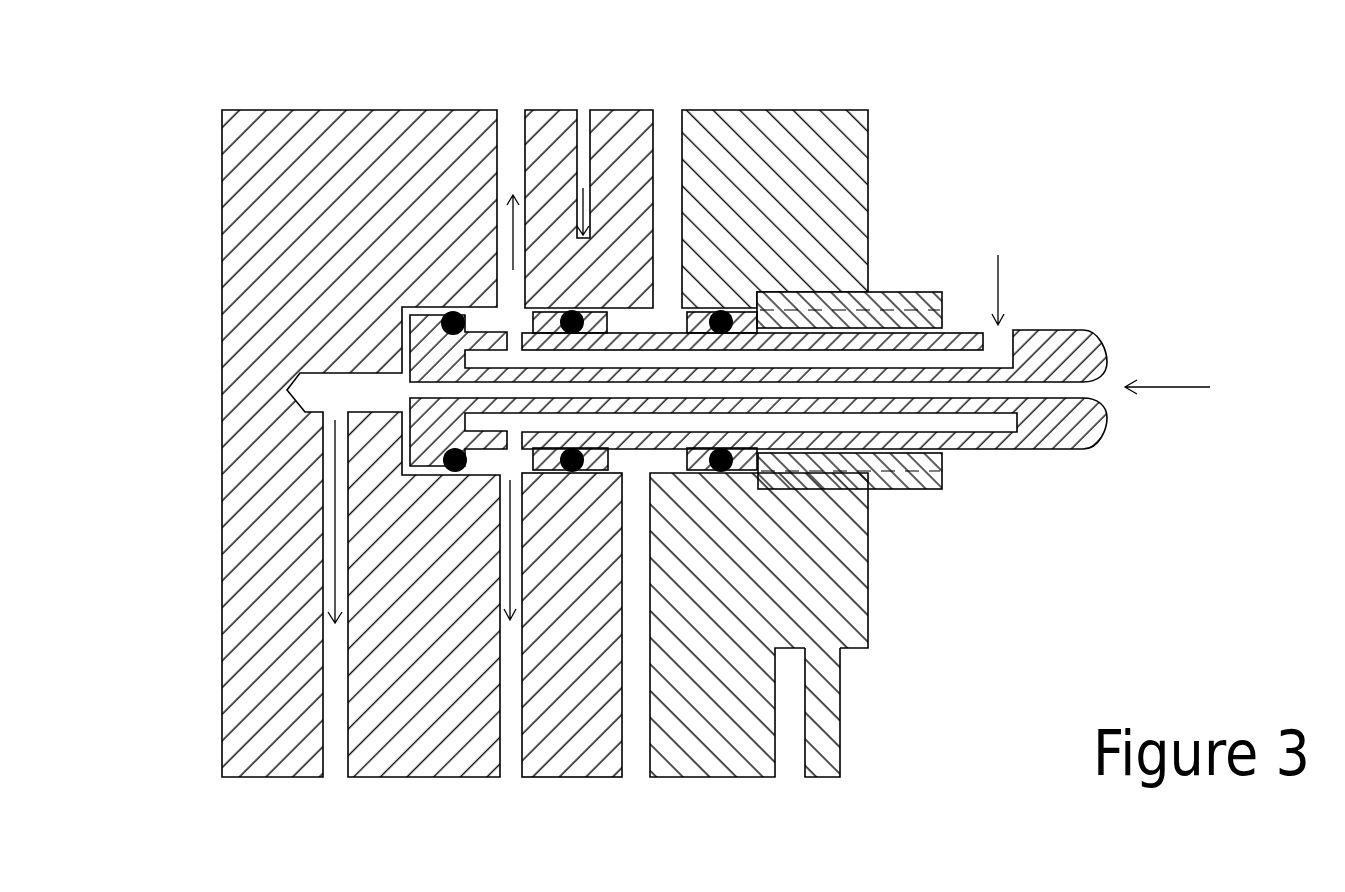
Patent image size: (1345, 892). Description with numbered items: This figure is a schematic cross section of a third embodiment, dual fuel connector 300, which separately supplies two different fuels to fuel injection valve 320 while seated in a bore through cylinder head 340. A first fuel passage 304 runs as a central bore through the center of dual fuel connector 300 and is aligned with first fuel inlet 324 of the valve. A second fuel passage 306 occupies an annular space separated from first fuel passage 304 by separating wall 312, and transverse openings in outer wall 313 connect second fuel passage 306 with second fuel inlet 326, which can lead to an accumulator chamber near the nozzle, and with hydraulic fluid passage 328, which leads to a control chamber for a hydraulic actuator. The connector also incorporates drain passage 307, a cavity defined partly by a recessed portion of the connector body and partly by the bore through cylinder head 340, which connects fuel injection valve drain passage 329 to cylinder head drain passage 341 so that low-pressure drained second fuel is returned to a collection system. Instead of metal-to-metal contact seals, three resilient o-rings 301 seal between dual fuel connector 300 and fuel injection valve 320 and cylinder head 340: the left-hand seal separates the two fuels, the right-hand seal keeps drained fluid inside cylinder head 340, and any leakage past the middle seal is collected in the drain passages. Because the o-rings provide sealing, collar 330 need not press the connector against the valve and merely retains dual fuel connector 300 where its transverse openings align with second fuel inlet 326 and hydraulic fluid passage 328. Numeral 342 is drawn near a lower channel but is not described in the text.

The dual fuel connector 300 is at (1043, 347).
The o-ring 301 is at (572, 312).
The first fuel passage 304 is at (868, 390).
The second fuel passage 306 is at (965, 423).
The drain passage 307 is at (653, 322).
The separating wall 312 is at (922, 413).
The outer wall 313 is at (823, 443).
The fuel injection valve 320 is at (325, 273).
The first fuel inlet 324 is at (363, 387).
The second fuel inlet 326 is at (510, 737).
The hydraulic fluid passage 328 is at (508, 122).
The fuel injection valve drain passage 329 is at (587, 135).
The collar 330 is at (880, 293).
The cylinder head 340 is at (790, 577).
The cylinder head drain passage 341 is at (793, 723).
The channel 342 is at (638, 733).